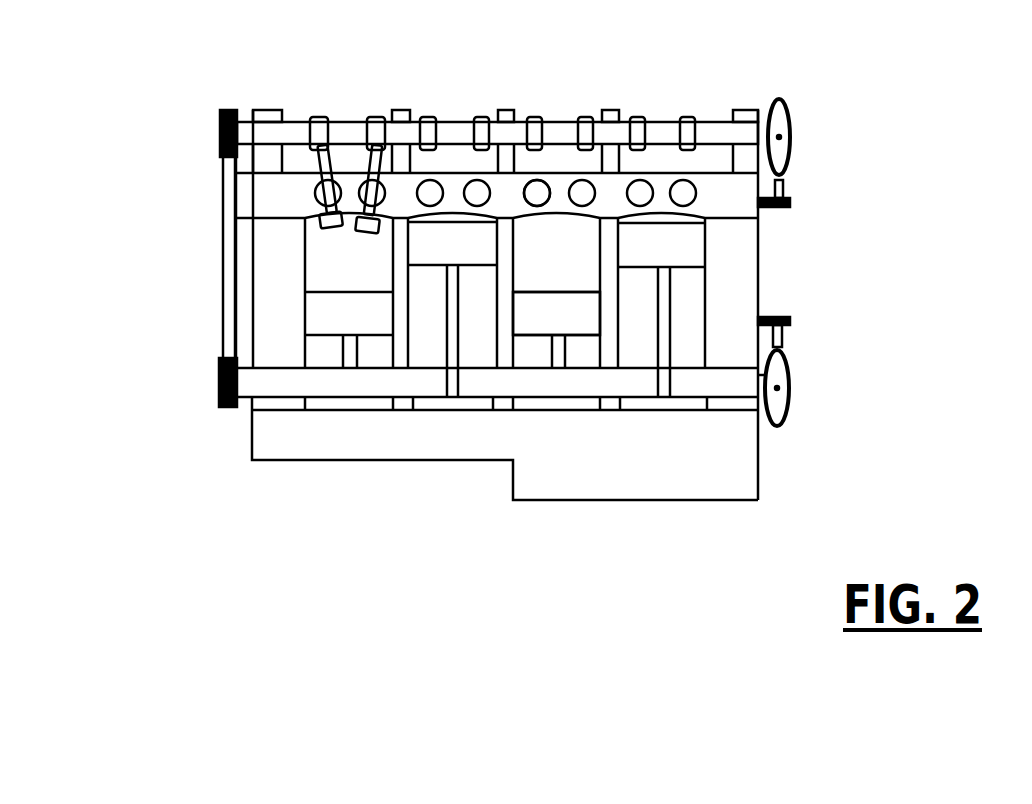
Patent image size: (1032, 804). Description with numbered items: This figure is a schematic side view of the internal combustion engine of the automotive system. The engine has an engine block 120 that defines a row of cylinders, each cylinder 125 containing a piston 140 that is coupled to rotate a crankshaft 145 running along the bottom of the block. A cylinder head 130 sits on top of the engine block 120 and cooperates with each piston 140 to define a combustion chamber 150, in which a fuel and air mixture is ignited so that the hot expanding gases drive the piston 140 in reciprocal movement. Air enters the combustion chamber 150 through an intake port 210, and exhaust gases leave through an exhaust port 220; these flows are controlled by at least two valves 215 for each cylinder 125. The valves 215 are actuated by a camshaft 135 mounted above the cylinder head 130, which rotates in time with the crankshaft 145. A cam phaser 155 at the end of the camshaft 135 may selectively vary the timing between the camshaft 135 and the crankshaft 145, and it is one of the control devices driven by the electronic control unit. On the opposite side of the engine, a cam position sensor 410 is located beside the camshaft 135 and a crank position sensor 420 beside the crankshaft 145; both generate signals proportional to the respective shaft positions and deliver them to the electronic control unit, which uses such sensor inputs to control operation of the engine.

The engine block 120 is at (257, 293).
The cylinder 125 is at (517, 268).
The cylinder head 130 is at (253, 210).
The camshaft 135 is at (347, 127).
The piston 140 is at (563, 312).
The crankshaft 145 is at (297, 388).
The combustion chamber 150 is at (663, 218).
The cam phaser 155 is at (218, 128).
The intake port 210 is at (549, 180).
The valves 215 is at (318, 221).
The exhaust port 220 is at (467, 182).
The cam position sensor 410 is at (788, 202).
The crank position sensor 420 is at (788, 325).